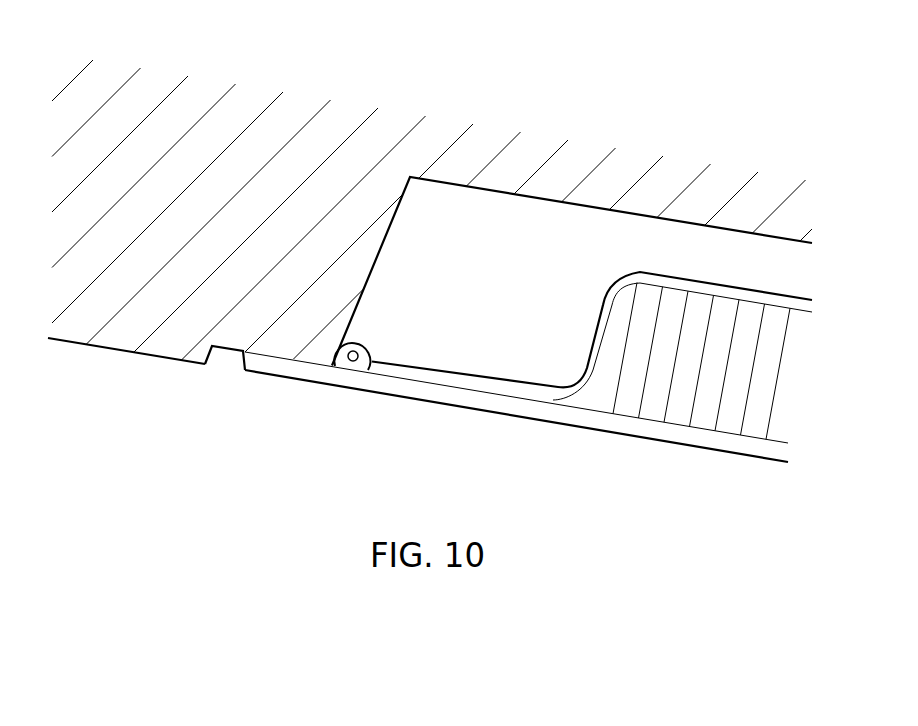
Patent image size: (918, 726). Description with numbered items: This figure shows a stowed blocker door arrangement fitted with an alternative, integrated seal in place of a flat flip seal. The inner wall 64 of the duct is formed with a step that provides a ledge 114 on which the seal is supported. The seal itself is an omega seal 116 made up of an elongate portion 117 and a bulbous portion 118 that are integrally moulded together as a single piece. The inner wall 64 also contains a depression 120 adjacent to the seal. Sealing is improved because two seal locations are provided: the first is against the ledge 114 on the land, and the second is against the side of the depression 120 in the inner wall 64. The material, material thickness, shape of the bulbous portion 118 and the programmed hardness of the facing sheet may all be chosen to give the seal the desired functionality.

The inner wall 64 is at (184, 300).
The ledge 114 is at (233, 351).
The omega seal 116 is at (386, 324).
The elongate portion 117 is at (300, 379).
The bulbous portion 118 is at (372, 357).
The depression 120 is at (518, 255).